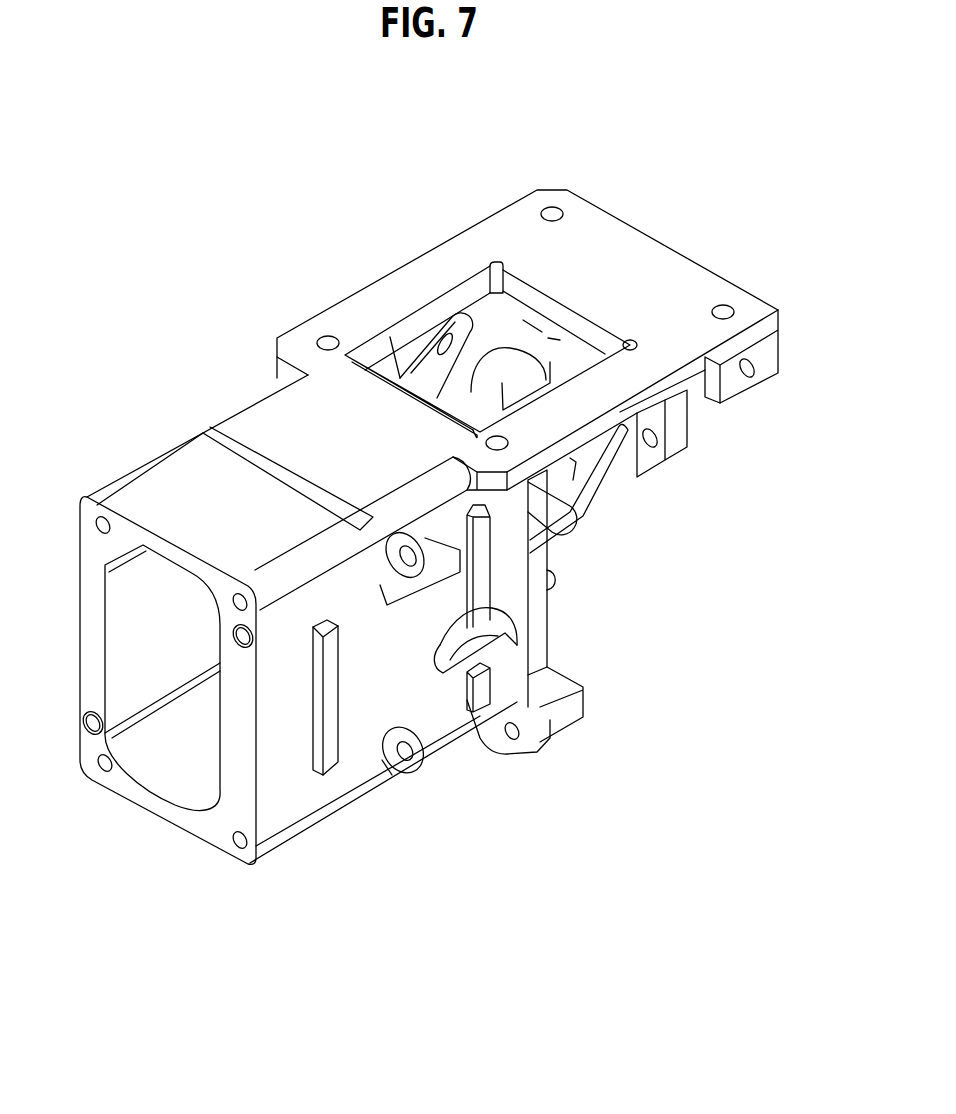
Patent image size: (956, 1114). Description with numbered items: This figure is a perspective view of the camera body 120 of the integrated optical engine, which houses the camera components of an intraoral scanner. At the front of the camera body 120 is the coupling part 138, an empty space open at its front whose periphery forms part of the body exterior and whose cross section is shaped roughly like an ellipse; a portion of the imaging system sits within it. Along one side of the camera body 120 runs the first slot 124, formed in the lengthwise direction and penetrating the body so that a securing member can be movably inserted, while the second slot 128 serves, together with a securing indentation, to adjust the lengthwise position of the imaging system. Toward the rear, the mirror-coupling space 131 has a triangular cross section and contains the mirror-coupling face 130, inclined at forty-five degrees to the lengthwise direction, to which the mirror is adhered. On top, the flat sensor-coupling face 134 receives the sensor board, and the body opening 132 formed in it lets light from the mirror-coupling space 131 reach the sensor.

The camera body 120 is at (172, 406).
The first slot 124 is at (470, 520).
The second slot 128 is at (433, 558).
The mirror-coupling face 130 is at (428, 375).
The mirror-coupling space 131 is at (576, 470).
The body opening 132 is at (478, 342).
The sensor-coupling face 134 is at (668, 278).
The coupling part 138 is at (198, 722).